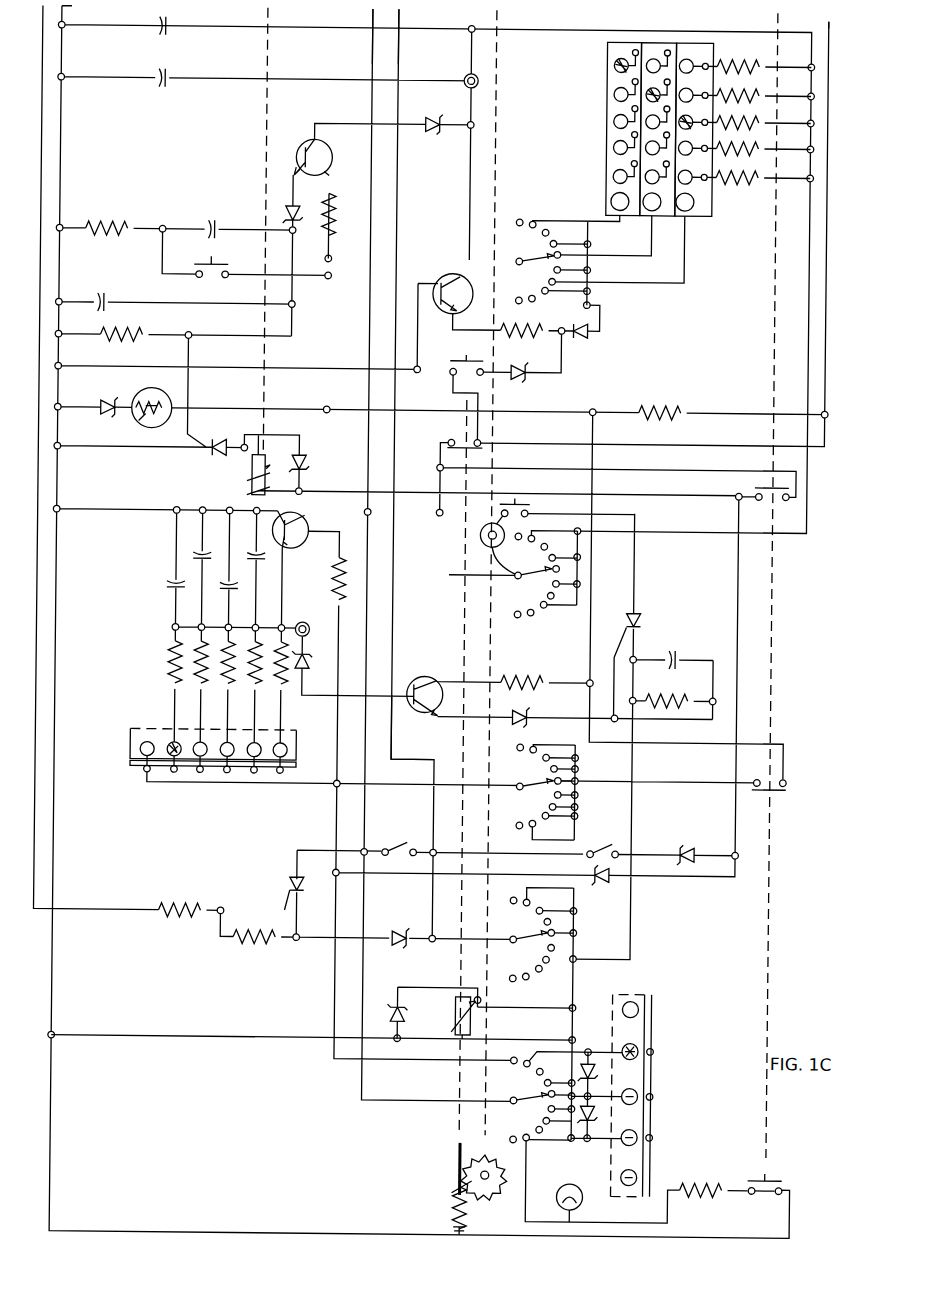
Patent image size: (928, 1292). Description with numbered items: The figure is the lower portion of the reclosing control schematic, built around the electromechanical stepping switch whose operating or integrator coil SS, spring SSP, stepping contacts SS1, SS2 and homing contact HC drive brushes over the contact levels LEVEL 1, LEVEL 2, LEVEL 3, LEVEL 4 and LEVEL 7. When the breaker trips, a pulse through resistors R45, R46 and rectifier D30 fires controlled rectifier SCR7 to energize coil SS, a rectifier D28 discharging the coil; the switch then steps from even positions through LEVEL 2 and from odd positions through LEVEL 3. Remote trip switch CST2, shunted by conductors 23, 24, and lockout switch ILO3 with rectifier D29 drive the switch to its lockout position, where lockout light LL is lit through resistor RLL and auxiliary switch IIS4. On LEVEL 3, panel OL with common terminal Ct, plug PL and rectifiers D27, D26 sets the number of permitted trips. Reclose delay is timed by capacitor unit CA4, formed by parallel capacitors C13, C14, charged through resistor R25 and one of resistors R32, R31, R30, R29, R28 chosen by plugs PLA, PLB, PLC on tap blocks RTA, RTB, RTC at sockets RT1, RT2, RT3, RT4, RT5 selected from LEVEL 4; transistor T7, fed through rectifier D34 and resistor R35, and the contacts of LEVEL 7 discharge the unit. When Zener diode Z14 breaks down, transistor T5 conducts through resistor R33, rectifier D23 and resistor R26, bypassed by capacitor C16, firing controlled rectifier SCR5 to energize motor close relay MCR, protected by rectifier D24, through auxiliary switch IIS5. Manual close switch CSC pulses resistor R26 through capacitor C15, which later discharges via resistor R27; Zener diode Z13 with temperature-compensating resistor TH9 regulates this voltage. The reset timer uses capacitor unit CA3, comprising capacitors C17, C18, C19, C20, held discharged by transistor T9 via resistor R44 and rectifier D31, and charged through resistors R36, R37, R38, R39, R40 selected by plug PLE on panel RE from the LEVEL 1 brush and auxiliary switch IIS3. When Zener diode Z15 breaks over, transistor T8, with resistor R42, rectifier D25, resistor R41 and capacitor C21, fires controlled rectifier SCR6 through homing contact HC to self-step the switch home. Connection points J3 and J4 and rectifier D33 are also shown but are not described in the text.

The conductor 24 is at (372, 12).
The conductor 23 is at (399, 12).
The capacitor unit CA4 is at (128, 61).
The capacitor C13 is at (163, 16).
The capacitor C14 is at (166, 68).
The jack J3 is at (466, 76).
The Zener diode Z14 is at (438, 128).
The transistor T5 is at (300, 145).
The resistor R33 is at (350, 184).
The resistor R27 is at (107, 226).
The capacitor C15 is at (213, 220).
The single-pole single-throw switch CSC is at (231, 262).
The rectifier D23 is at (296, 230).
The transient suppression capacitor C16 is at (104, 295).
The resistor R26 is at (150, 333).
The Zener diode Z13 is at (113, 398).
The resistor TH9 is at (166, 390).
The silicon-controlled rectifier SCR5 is at (218, 452).
The motor close relay MCR is at (257, 470).
The rectifier D24 is at (312, 458).
The transistor T7 is at (455, 270).
The stepping contact SS2 is at (466, 353).
The stepping contacts SS1 is at (460, 436).
The resistor R35 is at (540, 335).
The rectifier D34 is at (576, 331).
The diode D33 is at (521, 378).
The resistor R25 is at (656, 406).
The auxiliary switch IIS5 is at (757, 484).
The homing contact HC is at (528, 499).
The fourth level of contacts LEVEL 4 is at (591, 262).
The seventh level of contacts LEVEL 7 is at (535, 582).
The silicon-controlled rectifier SCR6 is at (646, 620).
The transient suppression capacitor C21 is at (674, 654).
The resistor R41 is at (670, 697).
The resistor R42 is at (526, 678).
The rectifier D25 is at (524, 712).
The transistor T8 is at (420, 712).
The transistor T9 is at (300, 512).
The resistor R44 is at (341, 578).
The capacitor unit CA3 is at (160, 561).
The capacitor C20 is at (173, 583).
The capacitor C19 is at (200, 553).
The capacitor C18 is at (226, 586).
The capacitor C17 is at (256, 553).
The jack J4 is at (309, 619).
The Zener diode Z15 is at (312, 668).
The resistor R40 is at (176, 650).
The resistor R39 is at (205, 686).
The resistor R38 is at (232, 690).
The resistor R37 is at (262, 690).
The resistor R36 is at (288, 690).
The tap block RE is at (138, 736).
The plug PLE is at (176, 742).
The first level of contacts LEVEL 1 is at (562, 787).
The auxiliary switch IIS3 is at (788, 784).
The switch ILO3 is at (626, 844).
The rectifier D29 is at (682, 834).
The rectifier D31 is at (604, 867).
The switch CST2 is at (412, 838).
The silicon-controlled rectifier SCR7 is at (296, 882).
The resistor R45 is at (192, 900).
The resistor R46 is at (245, 942).
The rectifier D30 is at (409, 926).
The second level of contacts LEVEL 2 is at (558, 944).
The rectifier D28 is at (400, 996).
The operating coil SS is at (466, 1010).
The third level of contacts LEVEL 3 is at (549, 1082).
The rectifier D27 is at (598, 1044).
The rectifier D26 is at (598, 1132).
The common terminal Ct is at (634, 1004).
The plug PL is at (650, 1042).
The panel OL is at (663, 1121).
The lockout light LL is at (570, 1182).
The resistor RLL is at (706, 1180).
The auxiliary switch IIS4 is at (762, 1176).
The spring SSP is at (465, 1200).
The reclose timer panel RTA is at (608, 36).
The reclose timer panel RTB is at (656, 36).
The reclose timer panel RTC is at (695, 36).
The plug PLA is at (608, 54).
The connection screw socket RT1 is at (608, 60).
The connection screw socket RT2 is at (608, 86).
The plug PLB is at (608, 92).
The connection screw socket RT3 is at (608, 112).
The plug PLC is at (608, 122).
The connection screw socket RT4 is at (608, 142).
The connection screw socket RT5 is at (608, 170).
The resistor R32 is at (725, 58).
The resistor R31 is at (755, 88).
The resistor R30 is at (760, 115).
The resistor R29 is at (765, 141).
The resistor R28 is at (760, 180).